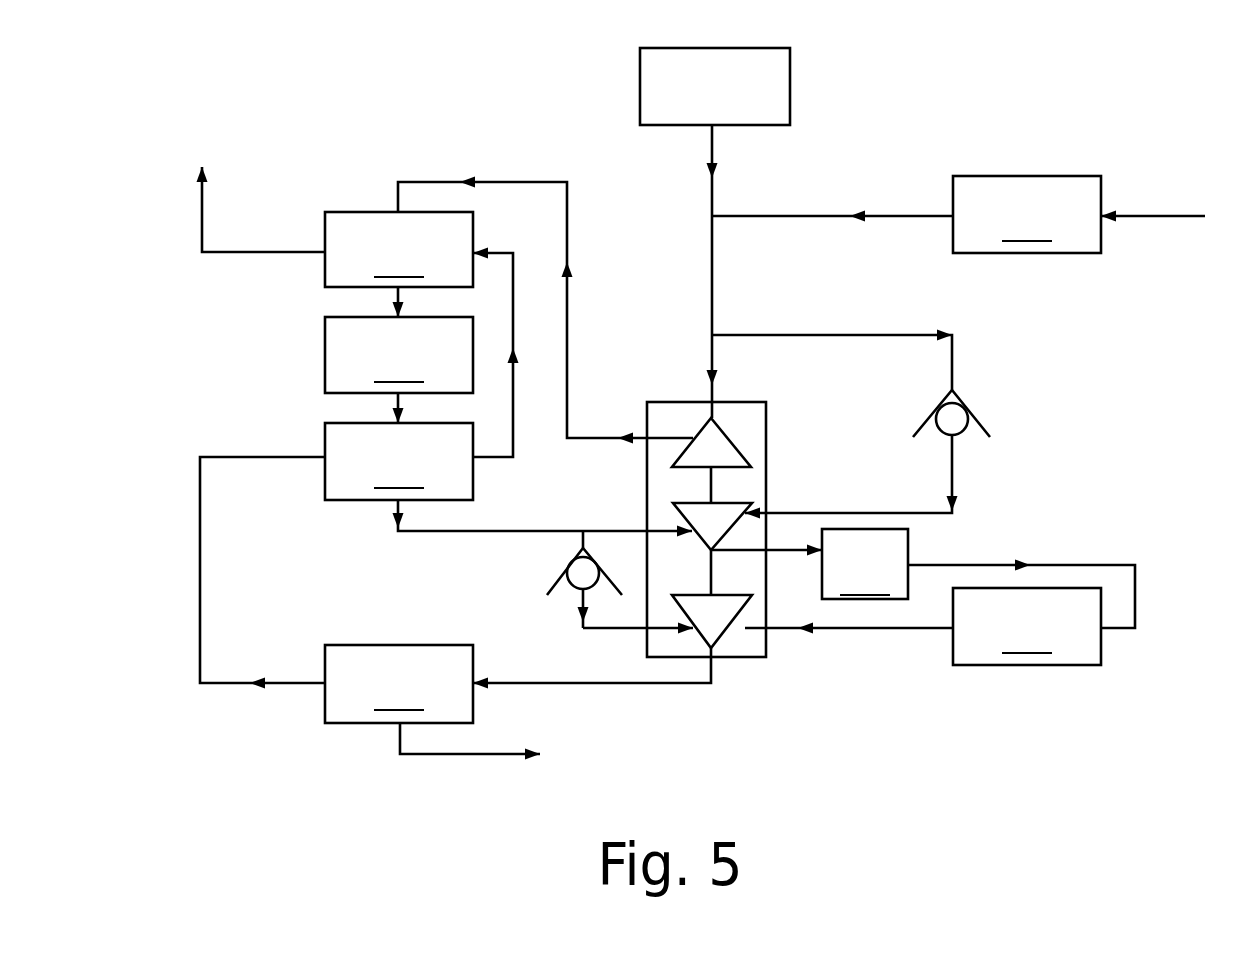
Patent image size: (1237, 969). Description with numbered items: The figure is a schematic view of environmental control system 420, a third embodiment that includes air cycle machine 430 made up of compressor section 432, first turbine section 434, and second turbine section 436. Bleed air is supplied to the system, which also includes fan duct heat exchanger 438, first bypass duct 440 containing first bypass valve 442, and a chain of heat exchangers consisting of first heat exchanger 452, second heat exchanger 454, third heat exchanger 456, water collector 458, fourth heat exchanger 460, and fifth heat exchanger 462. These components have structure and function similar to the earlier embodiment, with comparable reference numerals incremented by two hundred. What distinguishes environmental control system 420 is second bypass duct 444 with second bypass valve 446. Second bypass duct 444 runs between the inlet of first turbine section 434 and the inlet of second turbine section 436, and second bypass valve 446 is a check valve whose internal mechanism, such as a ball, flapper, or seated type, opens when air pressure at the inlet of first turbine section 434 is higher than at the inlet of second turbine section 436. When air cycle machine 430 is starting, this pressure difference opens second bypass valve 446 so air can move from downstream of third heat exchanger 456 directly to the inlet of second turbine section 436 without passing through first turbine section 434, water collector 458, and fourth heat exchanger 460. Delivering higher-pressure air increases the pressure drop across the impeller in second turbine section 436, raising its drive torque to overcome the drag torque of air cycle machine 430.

The environmental control system 420 is at (296, 152).
The air cycle machine 430 is at (680, 400).
The compressor section 432 is at (725, 452).
The first turbine section 434 is at (673, 505).
The second turbine section 436 is at (713, 630).
The fan duct heat exchanger 438 is at (1027, 214).
The first bypass duct 440 is at (955, 356).
The first bypass valve 442 is at (955, 418).
The second bypass duct 444 is at (617, 632).
The second bypass valve 446 is at (580, 572).
The first heat exchanger 452 is at (399, 249).
The second heat exchanger 454 is at (399, 355).
The third heat exchanger 456 is at (399, 461).
The water collector 458 is at (865, 564).
The fourth heat exchanger 460 is at (1027, 626).
The fifth heat exchanger 462 is at (399, 684).